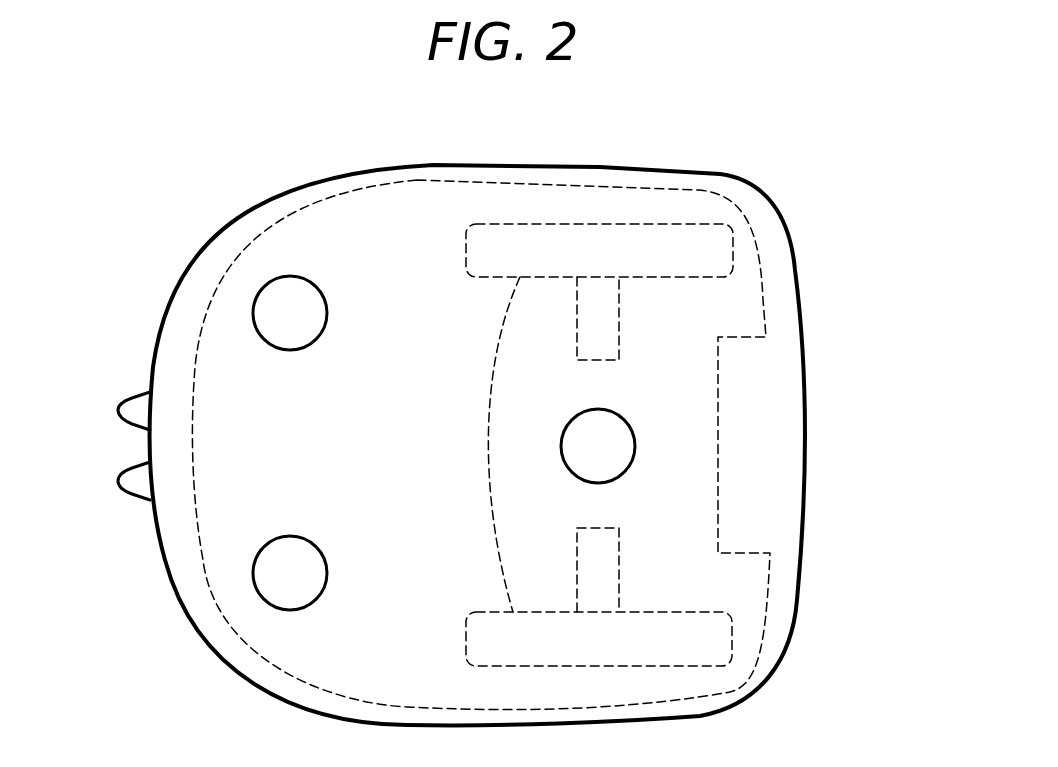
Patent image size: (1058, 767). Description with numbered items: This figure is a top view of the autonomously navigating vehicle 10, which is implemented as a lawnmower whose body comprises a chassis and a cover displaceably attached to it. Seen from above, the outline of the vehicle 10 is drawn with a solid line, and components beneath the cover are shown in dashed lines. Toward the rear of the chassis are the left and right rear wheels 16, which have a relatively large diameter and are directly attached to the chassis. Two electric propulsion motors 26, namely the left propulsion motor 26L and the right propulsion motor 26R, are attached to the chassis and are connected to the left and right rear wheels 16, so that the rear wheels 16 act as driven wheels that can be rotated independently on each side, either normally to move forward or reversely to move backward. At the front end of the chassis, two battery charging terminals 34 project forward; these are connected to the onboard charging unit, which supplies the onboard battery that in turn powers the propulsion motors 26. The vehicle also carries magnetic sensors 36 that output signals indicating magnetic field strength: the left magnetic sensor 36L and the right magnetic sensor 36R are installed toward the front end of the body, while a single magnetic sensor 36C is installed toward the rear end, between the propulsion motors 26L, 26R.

The autonomously navigating vehicle 10 is at (733, 164).
The rear wheels 16 is at (498, 444).
The propulsion motors 26 is at (699, 445).
The right propulsion motor 26R is at (620, 305).
The left propulsion motor 26L is at (620, 553).
The battery charging terminals 34 is at (118, 408).
The magnetic sensors 36 is at (274, 443).
The right magnetic sensor 36R is at (290, 350).
The left magnetic sensor 36L is at (290, 536).
The magnetic sensor 36C is at (632, 428).